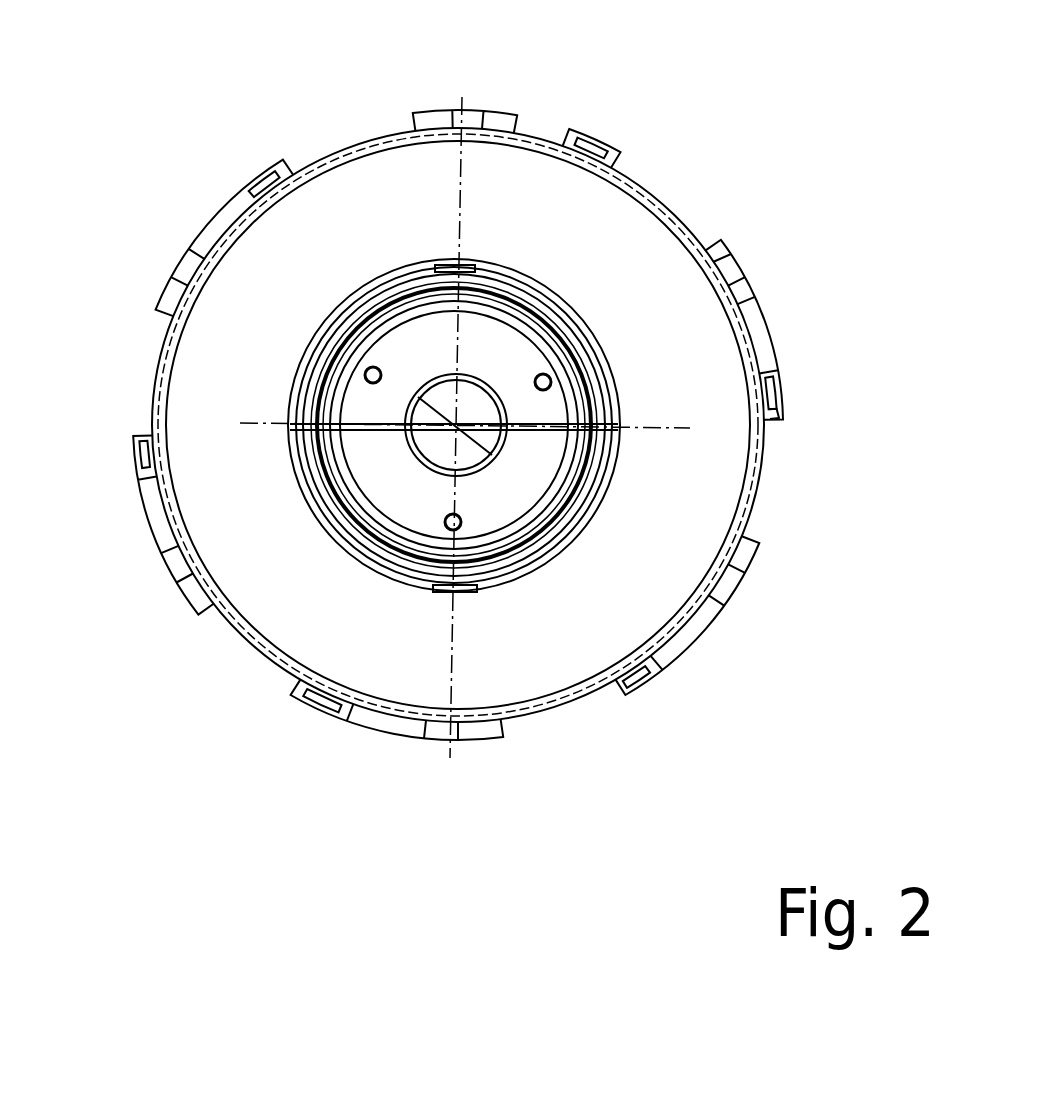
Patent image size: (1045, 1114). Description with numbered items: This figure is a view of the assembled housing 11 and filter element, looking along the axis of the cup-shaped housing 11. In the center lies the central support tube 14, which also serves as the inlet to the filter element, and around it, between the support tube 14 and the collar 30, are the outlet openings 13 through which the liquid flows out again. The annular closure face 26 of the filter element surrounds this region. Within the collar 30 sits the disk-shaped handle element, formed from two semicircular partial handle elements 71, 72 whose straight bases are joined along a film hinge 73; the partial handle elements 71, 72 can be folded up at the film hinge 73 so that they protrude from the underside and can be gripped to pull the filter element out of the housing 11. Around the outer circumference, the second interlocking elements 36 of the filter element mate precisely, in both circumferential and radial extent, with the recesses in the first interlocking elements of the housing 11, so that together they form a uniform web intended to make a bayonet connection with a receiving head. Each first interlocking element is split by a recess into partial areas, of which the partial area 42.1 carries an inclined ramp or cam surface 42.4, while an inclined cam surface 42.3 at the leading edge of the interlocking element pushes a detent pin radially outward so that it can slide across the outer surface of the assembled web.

The housing 11 is at (252, 200).
The outlet openings 13 is at (393, 300).
The central support tube 14 is at (467, 375).
The annular closure face 26 is at (500, 368).
The collar 30 is at (357, 305).
The second interlocking elements 36 is at (737, 283).
The partial area of first interlocking element 42.1 is at (763, 337).
The inclined cam surface 42.3 is at (727, 247).
The inclined ramp or cam surface 42.4 is at (775, 420).
The partial handle element 71 is at (290, 392).
The partial handle element 72 is at (312, 462).
The film hinge 73 is at (295, 430).